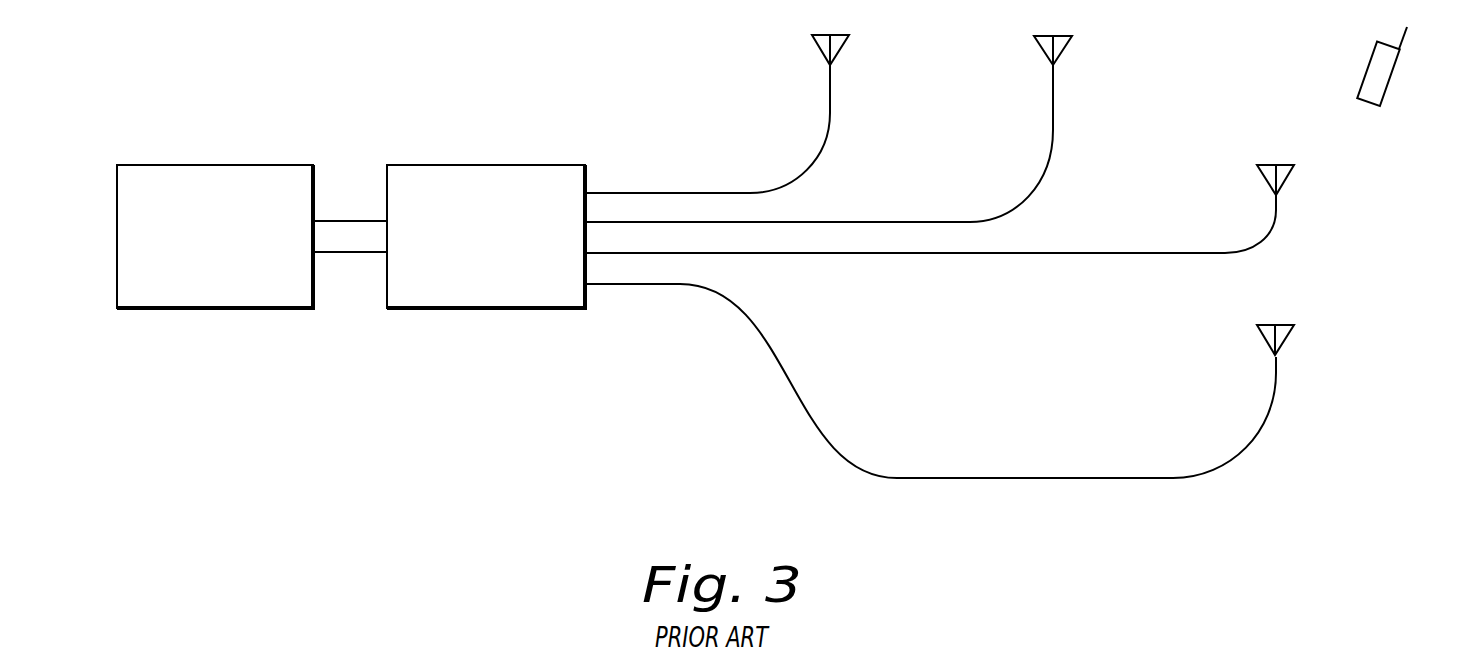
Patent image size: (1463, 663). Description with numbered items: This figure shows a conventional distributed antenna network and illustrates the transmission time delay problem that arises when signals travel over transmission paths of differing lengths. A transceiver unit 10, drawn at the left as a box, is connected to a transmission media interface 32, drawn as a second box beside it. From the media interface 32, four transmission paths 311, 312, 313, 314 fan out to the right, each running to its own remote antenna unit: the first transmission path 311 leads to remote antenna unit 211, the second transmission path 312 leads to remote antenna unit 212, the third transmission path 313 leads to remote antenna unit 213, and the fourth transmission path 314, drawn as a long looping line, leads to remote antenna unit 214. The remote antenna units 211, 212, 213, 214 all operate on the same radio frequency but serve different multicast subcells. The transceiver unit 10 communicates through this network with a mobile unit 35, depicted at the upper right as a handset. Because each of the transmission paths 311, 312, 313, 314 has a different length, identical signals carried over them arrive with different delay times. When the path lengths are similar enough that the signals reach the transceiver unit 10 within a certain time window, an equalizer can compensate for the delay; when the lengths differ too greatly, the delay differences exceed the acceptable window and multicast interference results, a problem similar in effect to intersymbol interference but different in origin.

The transceiver unit 10 is at (215, 309).
The transmission media interface 32 is at (486, 309).
The transmission path 311 is at (716, 192).
The transmission path 312 is at (895, 221).
The transmission path 313 is at (1118, 254).
The transmission path 314 is at (1123, 479).
The remote antenna unit 211 is at (843, 43).
The remote antenna unit 212 is at (1066, 45).
The remote antenna unit 213 is at (1288, 177).
The remote antenna unit 214 is at (1288, 337).
The mobile unit 35 is at (1394, 68).